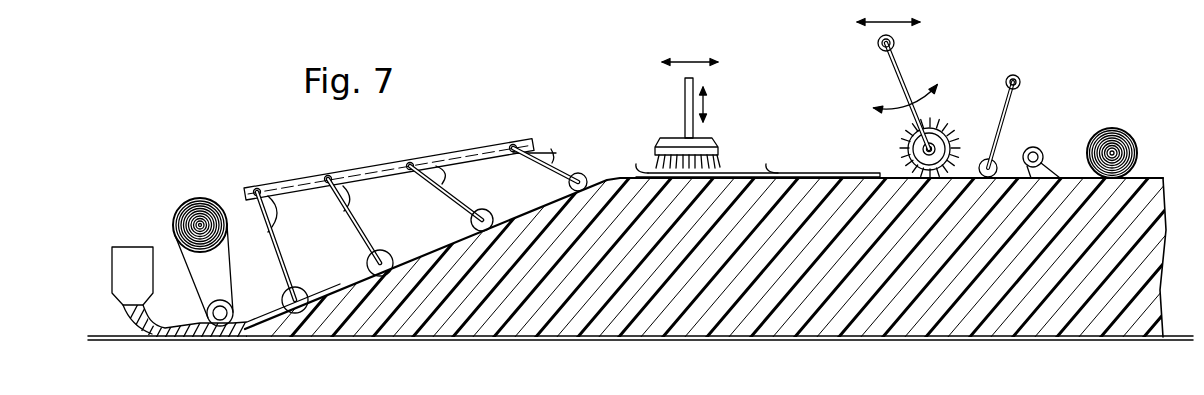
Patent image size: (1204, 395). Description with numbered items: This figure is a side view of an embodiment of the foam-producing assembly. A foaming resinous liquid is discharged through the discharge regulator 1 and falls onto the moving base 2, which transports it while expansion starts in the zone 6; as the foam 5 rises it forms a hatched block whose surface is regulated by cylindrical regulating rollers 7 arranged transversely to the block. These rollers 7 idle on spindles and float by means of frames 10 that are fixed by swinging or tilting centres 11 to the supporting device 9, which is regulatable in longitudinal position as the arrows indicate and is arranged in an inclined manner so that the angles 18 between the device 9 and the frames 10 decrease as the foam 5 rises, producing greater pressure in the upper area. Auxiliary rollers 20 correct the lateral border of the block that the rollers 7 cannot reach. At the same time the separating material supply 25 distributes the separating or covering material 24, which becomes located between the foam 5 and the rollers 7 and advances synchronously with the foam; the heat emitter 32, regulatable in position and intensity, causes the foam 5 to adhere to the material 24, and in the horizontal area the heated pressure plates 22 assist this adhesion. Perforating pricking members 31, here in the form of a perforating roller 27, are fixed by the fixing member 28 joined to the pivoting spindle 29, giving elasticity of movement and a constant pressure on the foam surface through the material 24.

The discharge regulator 1 is at (133, 256).
The moving base 2 is at (356, 338).
The foam 5 is at (755, 305).
The zone where expansion starts 6 is at (258, 333).
The regulating rollers 7 is at (293, 302).
The supporting device 9 is at (368, 170).
The floating frames 10 is at (277, 243).
The swinging or tilting centres 11 is at (257, 187).
The angles 18 is at (265, 183).
The auxiliary rollers 20 is at (1002, 167).
The pressure plates 22 is at (793, 173).
The separating or covering material 24 is at (188, 280).
The separating material supply 25 is at (191, 207).
The perforating roller 27 is at (946, 121).
The fixing member 28 is at (914, 86).
The pivoting spindle 29 is at (877, 40).
The pricking members 31 is at (903, 158).
The heat emitter 32 is at (708, 140).